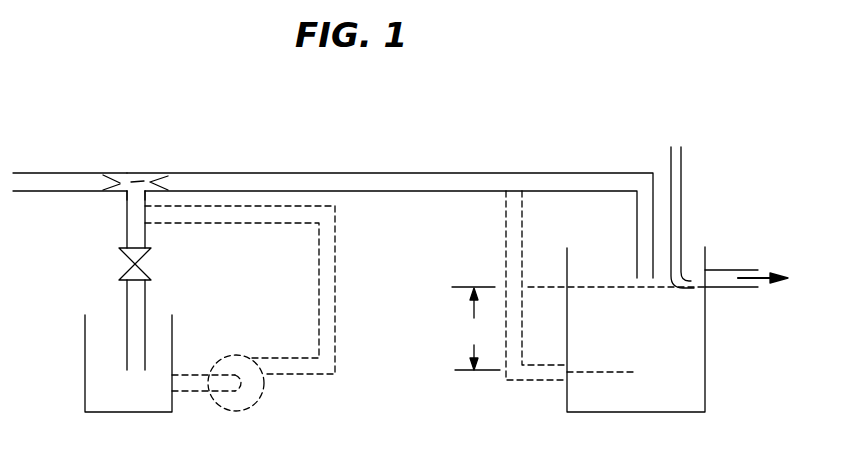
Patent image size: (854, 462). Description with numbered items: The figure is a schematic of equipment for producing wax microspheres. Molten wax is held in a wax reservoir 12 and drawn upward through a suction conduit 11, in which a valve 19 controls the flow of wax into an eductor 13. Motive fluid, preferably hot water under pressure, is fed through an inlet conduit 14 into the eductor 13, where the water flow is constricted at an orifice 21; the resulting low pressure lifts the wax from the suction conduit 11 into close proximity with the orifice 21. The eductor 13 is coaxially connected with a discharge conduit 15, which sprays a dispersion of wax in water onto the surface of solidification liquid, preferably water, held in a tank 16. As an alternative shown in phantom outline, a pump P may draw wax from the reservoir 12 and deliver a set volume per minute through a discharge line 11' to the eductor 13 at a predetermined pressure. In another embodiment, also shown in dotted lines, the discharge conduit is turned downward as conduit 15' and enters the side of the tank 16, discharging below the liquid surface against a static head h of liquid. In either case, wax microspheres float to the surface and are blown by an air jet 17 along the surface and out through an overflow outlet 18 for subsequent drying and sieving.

The suction conduit 11 is at (168, 280).
The discharge line 11' is at (270, 290).
The wax reservoir 12 is at (85, 366).
The eductor 13 is at (166, 176).
The inlet conduit 14 is at (95, 172).
The discharge conduit 15 is at (390, 205).
The discharge conduit (turned downward) 15' is at (530, 285).
The tank 16 is at (705, 350).
The air jet 17 is at (683, 185).
The overflow outlet 18 is at (733, 270).
The valve 19 is at (103, 263).
The orifice 21 is at (150, 172).
The pump P is at (253, 388).
The static head h is at (476, 328).